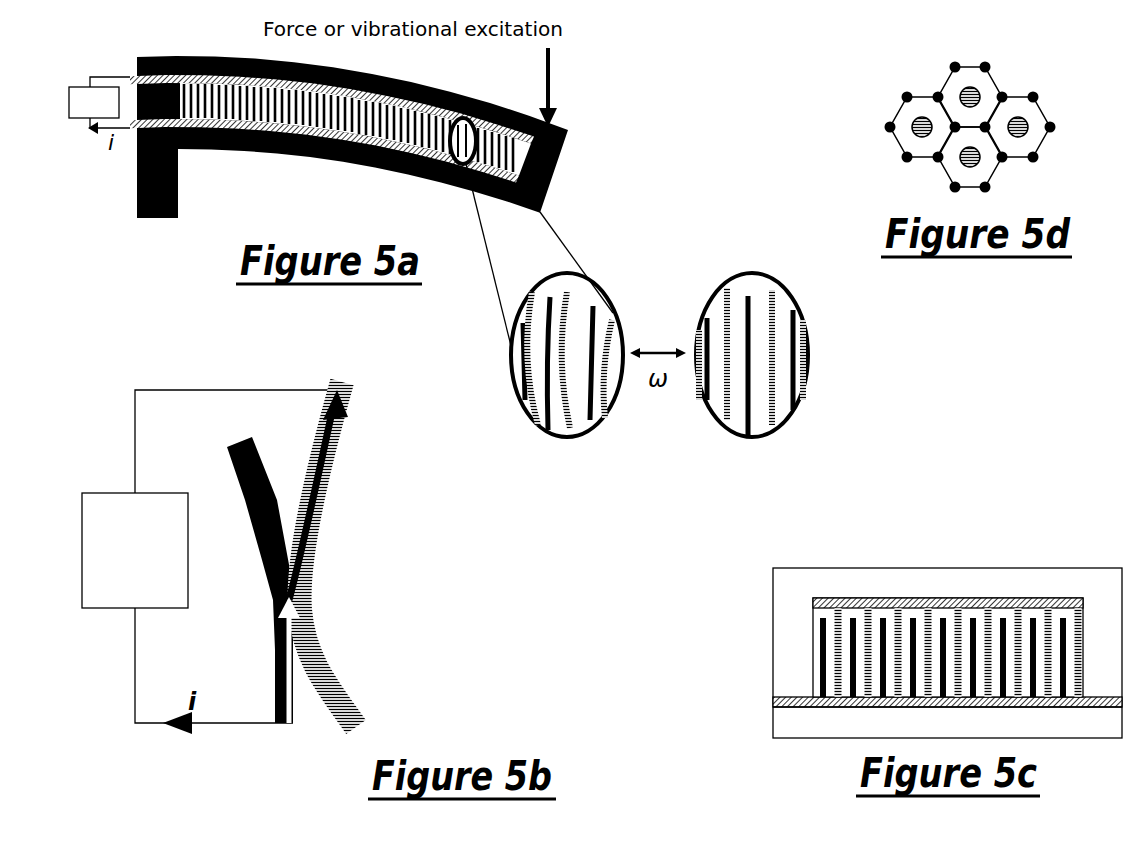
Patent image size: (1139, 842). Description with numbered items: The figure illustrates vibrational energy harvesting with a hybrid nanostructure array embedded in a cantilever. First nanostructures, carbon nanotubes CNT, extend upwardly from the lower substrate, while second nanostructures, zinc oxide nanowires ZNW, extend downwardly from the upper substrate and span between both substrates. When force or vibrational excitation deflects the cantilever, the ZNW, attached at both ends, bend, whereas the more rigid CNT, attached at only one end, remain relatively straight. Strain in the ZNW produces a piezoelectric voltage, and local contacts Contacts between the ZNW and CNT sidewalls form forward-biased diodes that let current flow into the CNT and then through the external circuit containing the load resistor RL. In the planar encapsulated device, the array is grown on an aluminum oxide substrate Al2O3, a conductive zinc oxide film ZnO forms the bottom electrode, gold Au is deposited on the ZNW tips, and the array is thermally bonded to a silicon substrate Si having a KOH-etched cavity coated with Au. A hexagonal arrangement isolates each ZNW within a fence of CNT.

In FIG. 5A, the carbon nanotube CNT is at (348, 128).
In FIG. 5B, the carbon nanotube CNT is at (235, 570).
In FIG. 5C, the carbon nanotube CNT is at (820, 605).
In FIG. 5D, the carbon nanotube CNT is at (987, 67).
In FIG. 5A, the zinc oxide nanowire ZNW is at (332, 128).
In FIG. 5B, the zinc oxide nanowire ZNW is at (353, 554).
In FIG. 5C, the zinc oxide nanowire ZNW is at (868, 620).
In FIG. 5D, the zinc oxide nanowire ZNW is at (1022, 123).
In FIG. 5A, the load resistor RL is at (94, 102).
In FIG. 5B, the load resistor RL is at (135, 550).
In FIG. 5A, the contacts Contacts is at (555, 362).
In FIG. 5C, the gold coating Au is at (977, 603).
In FIG. 5C, the zinc oxide film ZnO is at (1107, 700).
In FIG. 5C, the silicon substrate Si is at (790, 638).
In FIG. 5C, the aluminum oxide substrate Al2O3 is at (947, 723).